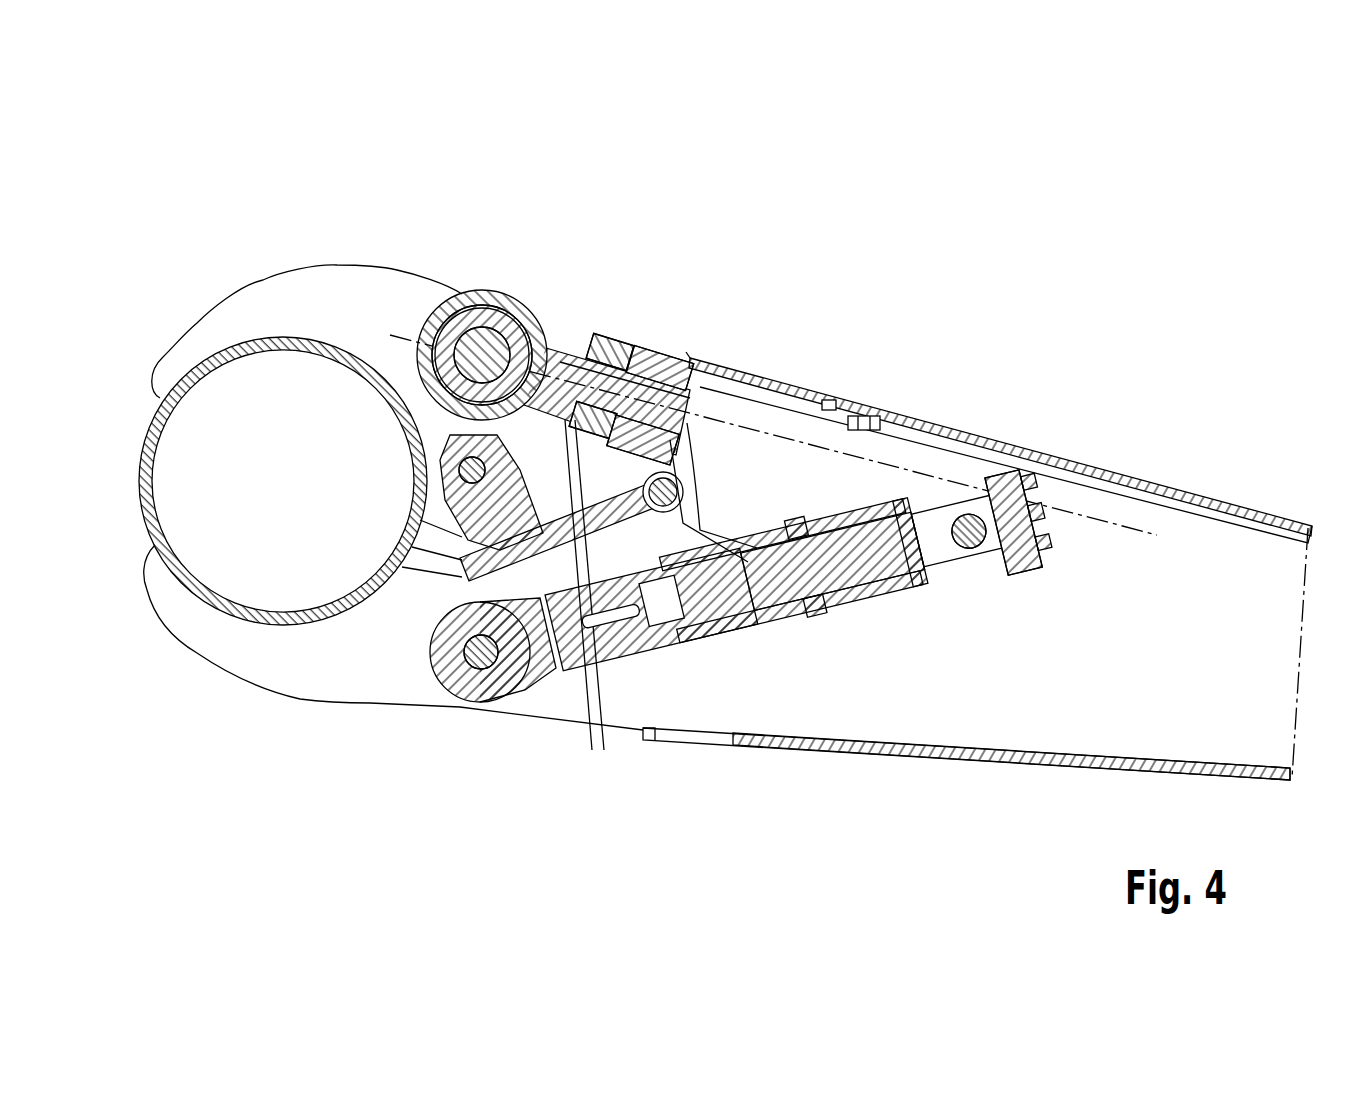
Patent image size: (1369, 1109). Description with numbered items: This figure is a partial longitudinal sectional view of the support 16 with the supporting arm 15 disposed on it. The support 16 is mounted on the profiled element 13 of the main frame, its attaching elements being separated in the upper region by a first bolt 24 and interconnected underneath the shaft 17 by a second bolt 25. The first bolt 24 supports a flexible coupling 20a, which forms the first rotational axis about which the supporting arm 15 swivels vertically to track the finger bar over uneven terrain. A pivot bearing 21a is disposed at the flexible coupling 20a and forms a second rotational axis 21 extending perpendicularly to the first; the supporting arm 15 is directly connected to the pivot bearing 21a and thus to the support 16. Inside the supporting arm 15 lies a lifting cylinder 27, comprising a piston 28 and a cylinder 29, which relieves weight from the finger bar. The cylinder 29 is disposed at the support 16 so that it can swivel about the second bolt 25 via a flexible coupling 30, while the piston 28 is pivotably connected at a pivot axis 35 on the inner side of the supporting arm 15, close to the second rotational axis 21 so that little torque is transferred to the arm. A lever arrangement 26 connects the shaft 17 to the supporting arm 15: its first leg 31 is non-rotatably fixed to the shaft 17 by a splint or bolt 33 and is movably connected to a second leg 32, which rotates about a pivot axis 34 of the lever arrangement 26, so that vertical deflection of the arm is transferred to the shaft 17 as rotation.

The profiled element 13 is at (148, 444).
The supporting arm 15 is at (1278, 650).
The support 16 is at (262, 300).
The shaft 17 is at (503, 475).
The flexible coupling 20a is at (522, 298).
The second rotational axis 21 is at (1137, 530).
The pivot bearing 21a is at (572, 350).
The first bolt 24 is at (470, 290).
The second bolt 25 is at (457, 680).
The lever arrangement 26 is at (577, 508).
The lifting cylinder 27 is at (838, 622).
The piston 28 is at (875, 550).
The cylinder 29 is at (670, 645).
The flexible coupling 30 is at (487, 685).
The first leg 31 is at (640, 362).
The second leg 32 is at (593, 733).
The splint or bolt 33 is at (458, 517).
The pivot axis of the lever arrangement 34 is at (673, 490).
The pivot axis 35 is at (978, 548).